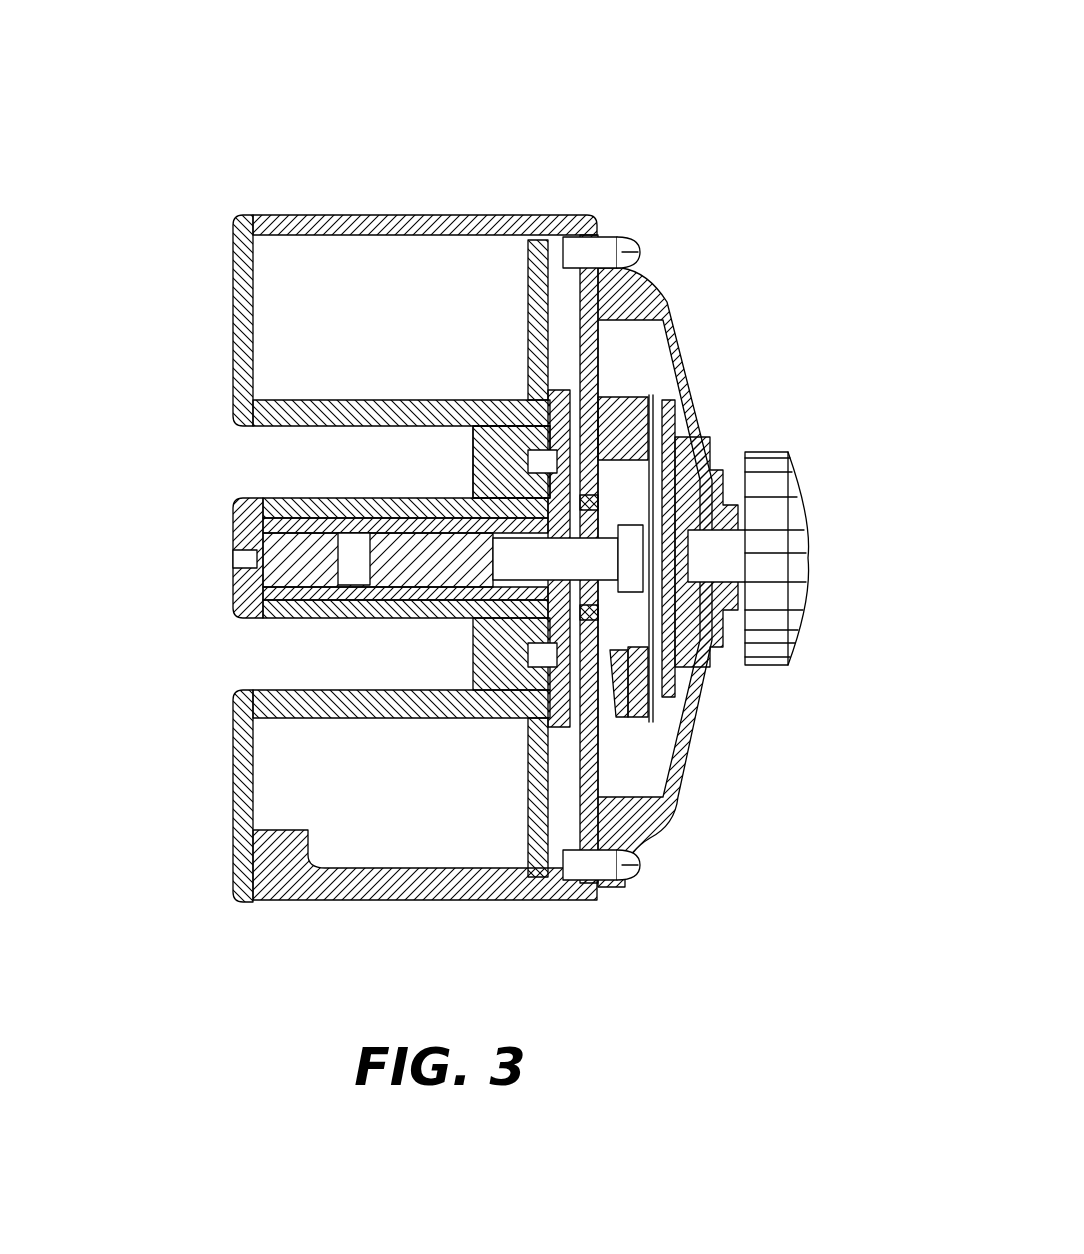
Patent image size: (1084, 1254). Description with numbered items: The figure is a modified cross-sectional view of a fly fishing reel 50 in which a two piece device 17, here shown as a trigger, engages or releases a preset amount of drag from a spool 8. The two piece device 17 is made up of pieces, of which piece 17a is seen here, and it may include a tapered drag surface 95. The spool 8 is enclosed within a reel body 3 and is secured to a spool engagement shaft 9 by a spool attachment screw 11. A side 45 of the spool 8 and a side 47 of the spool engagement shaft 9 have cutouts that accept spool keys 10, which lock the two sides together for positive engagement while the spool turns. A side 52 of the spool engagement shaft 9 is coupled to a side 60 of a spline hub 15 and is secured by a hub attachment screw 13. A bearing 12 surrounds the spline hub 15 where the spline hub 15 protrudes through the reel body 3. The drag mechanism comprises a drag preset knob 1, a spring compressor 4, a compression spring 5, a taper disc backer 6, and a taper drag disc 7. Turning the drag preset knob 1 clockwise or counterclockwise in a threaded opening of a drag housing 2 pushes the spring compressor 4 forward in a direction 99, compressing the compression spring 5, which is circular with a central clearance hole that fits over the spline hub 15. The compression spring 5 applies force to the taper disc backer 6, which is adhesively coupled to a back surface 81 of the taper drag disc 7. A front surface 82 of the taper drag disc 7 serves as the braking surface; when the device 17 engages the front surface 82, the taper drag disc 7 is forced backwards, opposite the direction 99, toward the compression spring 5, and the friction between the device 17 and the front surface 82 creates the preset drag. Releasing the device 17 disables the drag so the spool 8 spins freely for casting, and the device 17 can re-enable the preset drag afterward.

The fly fishing reel 50 is at (697, 105).
The reel body 3 is at (398, 225).
The side of the spool 45 is at (548, 256).
The spool 8 is at (243, 258).
The drag housing 2 is at (667, 302).
The two piece device 17 is at (618, 362).
The piece of the device 17a is at (617, 378).
The side of the spool engagement shaft 52 is at (600, 397).
The tapered drag surface 95 is at (650, 420).
The spool engagement shaft 9 is at (550, 402).
The side of the spool engagement shaft 47 is at (550, 413).
The bearing 12 is at (580, 505).
The spool attachment screw 11 is at (245, 530).
The hub attachment screw 13 is at (630, 568).
The drag preset knob 1 is at (797, 520).
The side of the spline hub 60 is at (570, 585).
The spool key 10 is at (533, 650).
The direction 99 is at (42, 672).
The spline hub 15 is at (637, 630).
The back surface of the taper drag disc 81 is at (628, 695).
The spring compressor 4 is at (662, 708).
The compression spring 5 is at (648, 713).
The taper disc backer 6 is at (635, 718).
The front surface of the taper drag disc 82 is at (620, 722).
The taper drag disc 7 is at (613, 710).